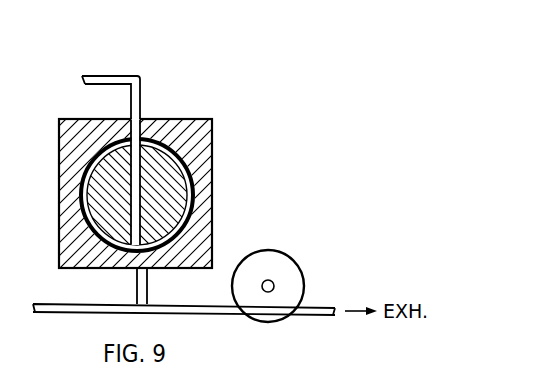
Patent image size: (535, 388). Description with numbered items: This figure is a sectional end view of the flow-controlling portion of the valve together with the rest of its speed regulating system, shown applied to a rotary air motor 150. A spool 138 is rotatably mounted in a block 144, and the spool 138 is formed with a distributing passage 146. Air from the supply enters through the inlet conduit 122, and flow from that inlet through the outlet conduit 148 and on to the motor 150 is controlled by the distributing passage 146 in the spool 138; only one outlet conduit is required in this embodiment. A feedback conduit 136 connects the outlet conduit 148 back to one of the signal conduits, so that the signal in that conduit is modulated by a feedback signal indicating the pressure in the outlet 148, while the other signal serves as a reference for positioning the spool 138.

The inlet conduit 122 is at (113, 85).
The feedback conduit 136 is at (88, 304).
The spool 138 is at (189, 183).
The block 144 is at (212, 207).
The distributing passage 146 is at (137, 158).
The outlet conduit 148 is at (147, 292).
The rotary air motor 150 is at (298, 280).